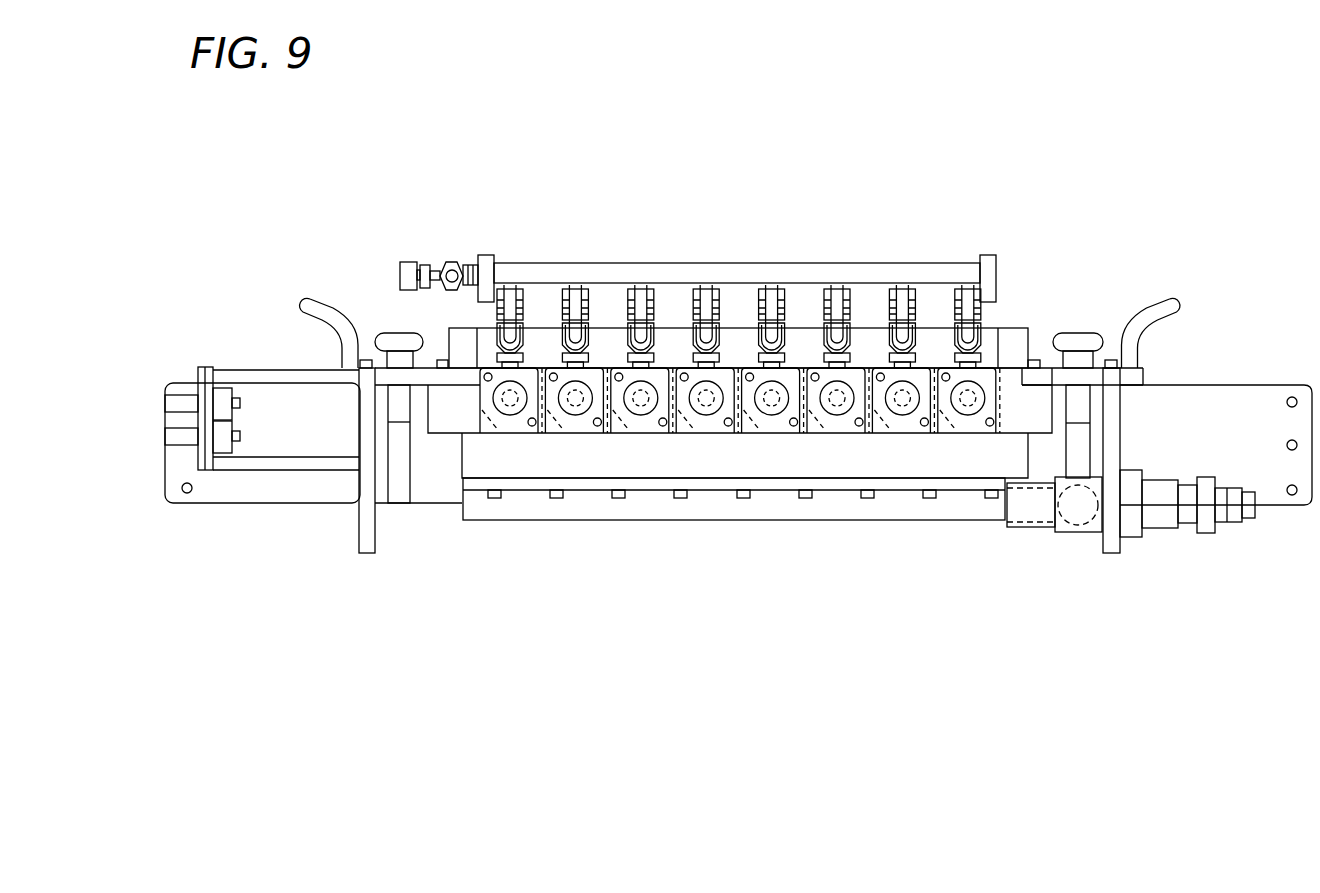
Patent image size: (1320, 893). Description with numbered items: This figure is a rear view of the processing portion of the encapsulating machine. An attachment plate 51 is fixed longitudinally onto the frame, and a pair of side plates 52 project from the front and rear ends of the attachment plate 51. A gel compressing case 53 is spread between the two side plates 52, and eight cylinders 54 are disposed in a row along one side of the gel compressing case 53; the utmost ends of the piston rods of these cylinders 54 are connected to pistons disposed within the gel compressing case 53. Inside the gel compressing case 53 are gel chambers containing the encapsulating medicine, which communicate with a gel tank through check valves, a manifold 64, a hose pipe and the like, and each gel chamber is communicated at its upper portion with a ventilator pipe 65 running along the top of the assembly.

The attachment plate 51 is at (1223, 403).
The side plates 52 is at (367, 530).
The gel compressing case 53 is at (1020, 418).
The cylinders 54 is at (510, 415).
The manifold 64 is at (845, 507).
The ventilator pipe 65 is at (675, 263).